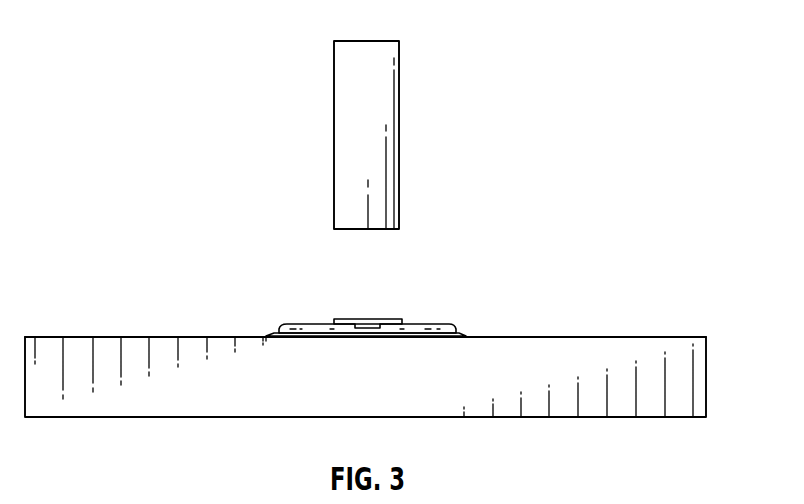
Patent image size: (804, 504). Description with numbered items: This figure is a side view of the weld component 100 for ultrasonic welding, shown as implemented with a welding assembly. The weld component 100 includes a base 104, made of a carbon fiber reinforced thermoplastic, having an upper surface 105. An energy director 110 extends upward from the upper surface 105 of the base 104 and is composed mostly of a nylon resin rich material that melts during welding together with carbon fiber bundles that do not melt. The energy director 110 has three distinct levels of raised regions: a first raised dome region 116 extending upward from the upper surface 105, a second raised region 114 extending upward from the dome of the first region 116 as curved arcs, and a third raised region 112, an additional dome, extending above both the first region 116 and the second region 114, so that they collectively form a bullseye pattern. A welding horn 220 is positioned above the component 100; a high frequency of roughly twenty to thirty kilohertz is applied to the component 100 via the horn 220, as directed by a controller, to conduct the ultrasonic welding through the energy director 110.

The weld component 100 is at (693, 321).
The base 104 is at (707, 378).
The upper surface 105 is at (75, 336).
The energy director 110 is at (413, 300).
The third raised region 112 is at (358, 319).
The second raised region 114 is at (292, 323).
The first raised dome region 116 is at (462, 334).
The welding horn 220 is at (372, 41).